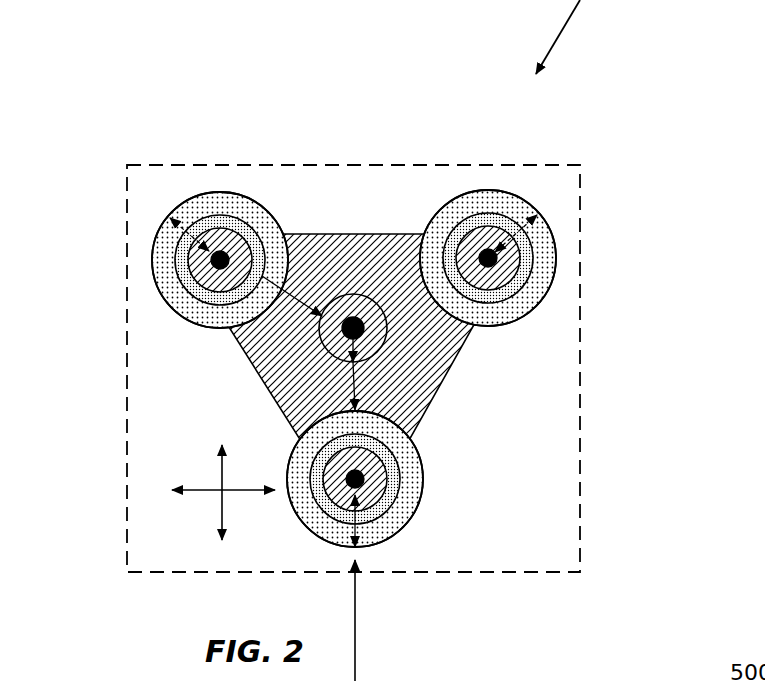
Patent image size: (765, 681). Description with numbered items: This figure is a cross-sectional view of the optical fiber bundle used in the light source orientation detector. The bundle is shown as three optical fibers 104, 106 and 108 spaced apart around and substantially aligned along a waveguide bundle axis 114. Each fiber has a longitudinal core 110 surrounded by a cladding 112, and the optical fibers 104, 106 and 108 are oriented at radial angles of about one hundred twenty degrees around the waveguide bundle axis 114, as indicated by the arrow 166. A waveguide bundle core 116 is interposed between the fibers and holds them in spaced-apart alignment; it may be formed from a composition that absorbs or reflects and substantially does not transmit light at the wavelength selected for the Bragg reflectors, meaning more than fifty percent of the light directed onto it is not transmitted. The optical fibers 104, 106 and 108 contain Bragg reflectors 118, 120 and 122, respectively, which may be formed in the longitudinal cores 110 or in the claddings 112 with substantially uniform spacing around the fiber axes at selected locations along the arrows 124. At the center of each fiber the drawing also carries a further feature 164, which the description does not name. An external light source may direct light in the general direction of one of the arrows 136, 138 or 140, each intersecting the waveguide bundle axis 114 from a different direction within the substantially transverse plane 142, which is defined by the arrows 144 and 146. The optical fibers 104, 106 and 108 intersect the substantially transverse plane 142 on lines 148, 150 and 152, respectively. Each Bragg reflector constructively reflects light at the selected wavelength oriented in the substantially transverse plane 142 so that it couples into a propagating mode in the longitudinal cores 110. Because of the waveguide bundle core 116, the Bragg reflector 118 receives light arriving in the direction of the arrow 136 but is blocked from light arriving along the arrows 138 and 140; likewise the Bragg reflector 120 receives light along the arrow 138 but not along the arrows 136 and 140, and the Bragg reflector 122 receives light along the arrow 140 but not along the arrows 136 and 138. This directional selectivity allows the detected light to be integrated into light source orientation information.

The optical fiber 104 is at (263, 207).
The optical fiber 106 is at (418, 453).
The optical fiber 108 is at (468, 340).
The longitudinal core 110 is at (523, 313).
The cladding 112 is at (492, 320).
The waveguide bundle axis 114 is at (353, 317).
The waveguide bundle core 116 is at (391, 266).
The Bragg reflector 118 is at (218, 300).
The Bragg reflector 120 is at (340, 490).
The Bragg reflector 122 is at (500, 305).
The arrows 124 is at (523, 253).
The arrow 136 is at (153, 210).
The arrow 138 is at (355, 625).
The arrow 140 is at (548, 202).
The substantially transverse plane 142 is at (468, 407).
The arrow 144 is at (203, 492).
The arrow 146 is at (224, 477).
The line 148 is at (288, 212).
The line 150 is at (283, 510).
The line 152 is at (433, 192).
The fiber center 164 is at (220, 252).
The arrow 166 is at (316, 336).